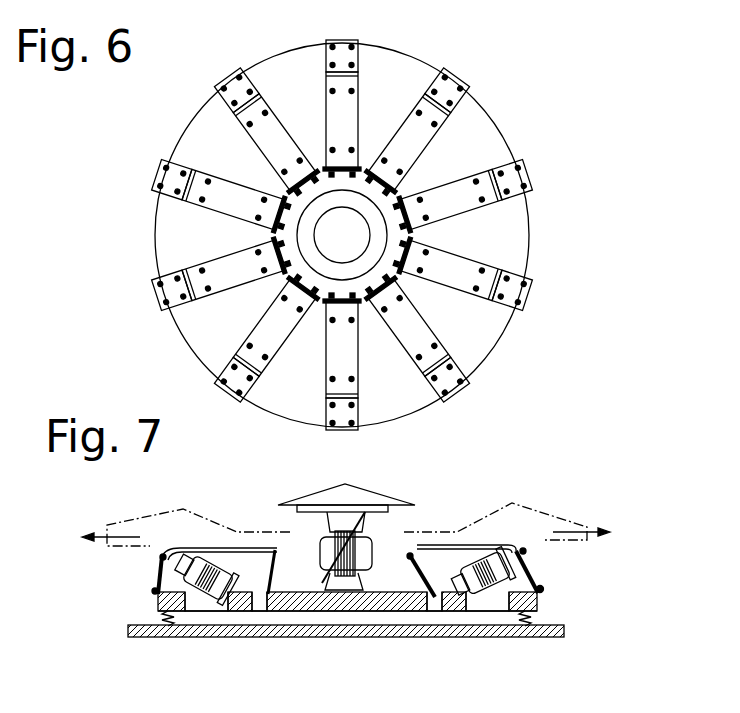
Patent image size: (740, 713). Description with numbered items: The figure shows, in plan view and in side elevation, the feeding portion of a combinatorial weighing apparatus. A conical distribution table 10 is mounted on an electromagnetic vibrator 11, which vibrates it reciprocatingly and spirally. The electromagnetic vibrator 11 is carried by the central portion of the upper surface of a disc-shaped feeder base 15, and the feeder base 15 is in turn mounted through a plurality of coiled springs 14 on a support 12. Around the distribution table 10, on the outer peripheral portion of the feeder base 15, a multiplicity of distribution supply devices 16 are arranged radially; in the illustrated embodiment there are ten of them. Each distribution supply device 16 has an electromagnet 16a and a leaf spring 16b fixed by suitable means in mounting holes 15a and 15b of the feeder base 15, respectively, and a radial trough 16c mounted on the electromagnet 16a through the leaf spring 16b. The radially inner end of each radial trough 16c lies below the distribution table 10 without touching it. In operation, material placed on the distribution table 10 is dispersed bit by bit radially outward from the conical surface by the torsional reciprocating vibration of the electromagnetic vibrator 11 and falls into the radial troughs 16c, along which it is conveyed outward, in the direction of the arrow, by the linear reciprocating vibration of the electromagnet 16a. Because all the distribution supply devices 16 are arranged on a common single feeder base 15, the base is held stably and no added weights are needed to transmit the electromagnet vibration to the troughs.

In FIG. 6, the conical distribution table 10 is at (277, 282).
In FIG. 7, the conical distribution table 10 is at (367, 488).
In FIG. 6, the electromagnetic vibrator 11 is at (325, 222).
In FIG. 7, the electromagnetic vibrator 11 is at (377, 532).
In FIG. 7, the support 12 is at (388, 630).
In FIG. 7, the coiled springs 14 is at (168, 623).
In FIG. 6, the feeder base 15 is at (529, 231).
In FIG. 7, the feeder base 15 is at (350, 603).
In FIG. 7, the mounting hole 15a is at (195, 607).
In FIG. 7, the mounting hole 15b is at (258, 605).
In FIG. 6, the distribution supply device 16 is at (280, 107).
In FIG. 7, the distribution supply device 16 is at (116, 595).
In FIG. 7, the electromagnet 16a is at (220, 562).
In FIG. 7, the leaf spring 16b is at (162, 575).
In FIG. 7, the radial trough 16c is at (142, 525).